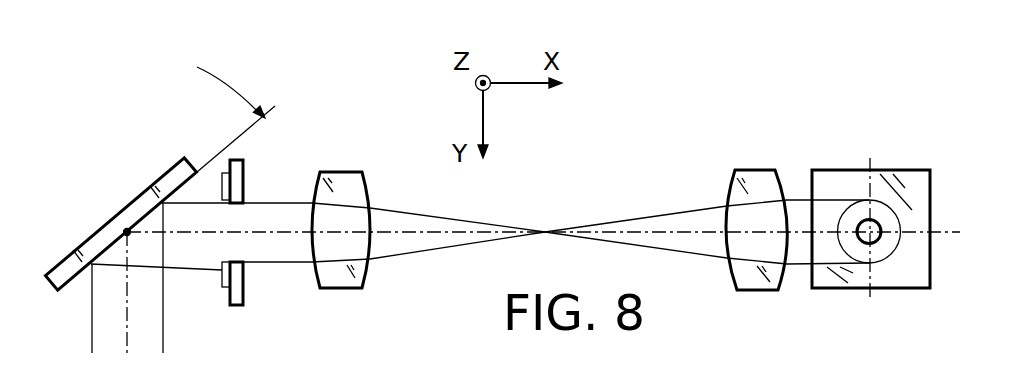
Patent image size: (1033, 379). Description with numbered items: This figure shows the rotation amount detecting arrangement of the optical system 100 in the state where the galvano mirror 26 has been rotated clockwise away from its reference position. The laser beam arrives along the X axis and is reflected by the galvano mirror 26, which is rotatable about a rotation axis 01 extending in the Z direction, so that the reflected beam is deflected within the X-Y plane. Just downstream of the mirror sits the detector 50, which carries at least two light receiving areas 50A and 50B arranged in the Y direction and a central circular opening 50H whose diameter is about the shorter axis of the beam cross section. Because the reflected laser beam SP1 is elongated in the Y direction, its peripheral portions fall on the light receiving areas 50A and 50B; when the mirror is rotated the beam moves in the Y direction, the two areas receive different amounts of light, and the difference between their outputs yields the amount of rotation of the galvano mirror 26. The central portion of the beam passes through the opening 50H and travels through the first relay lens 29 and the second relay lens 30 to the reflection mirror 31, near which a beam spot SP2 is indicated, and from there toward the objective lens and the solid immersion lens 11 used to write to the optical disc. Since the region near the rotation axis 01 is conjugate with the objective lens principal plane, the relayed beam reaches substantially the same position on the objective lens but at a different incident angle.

The optical system 100 is at (312, 115).
The galvano mirror 26 is at (103, 222).
The rotation axis 01 is at (126, 230).
The detector 50 is at (244, 182).
The light receiving area 50A is at (222, 180).
The light receiving area 50B is at (222, 288).
The circular opening 50H is at (243, 247).
The laser beam SP1 is at (182, 272).
The first relay lens 29 is at (340, 171).
The second relay lens 30 is at (751, 170).
The reflection mirror 31 is at (893, 170).
The solid immersion lens 11 is at (866, 220).
The light spot SP2 is at (882, 262).